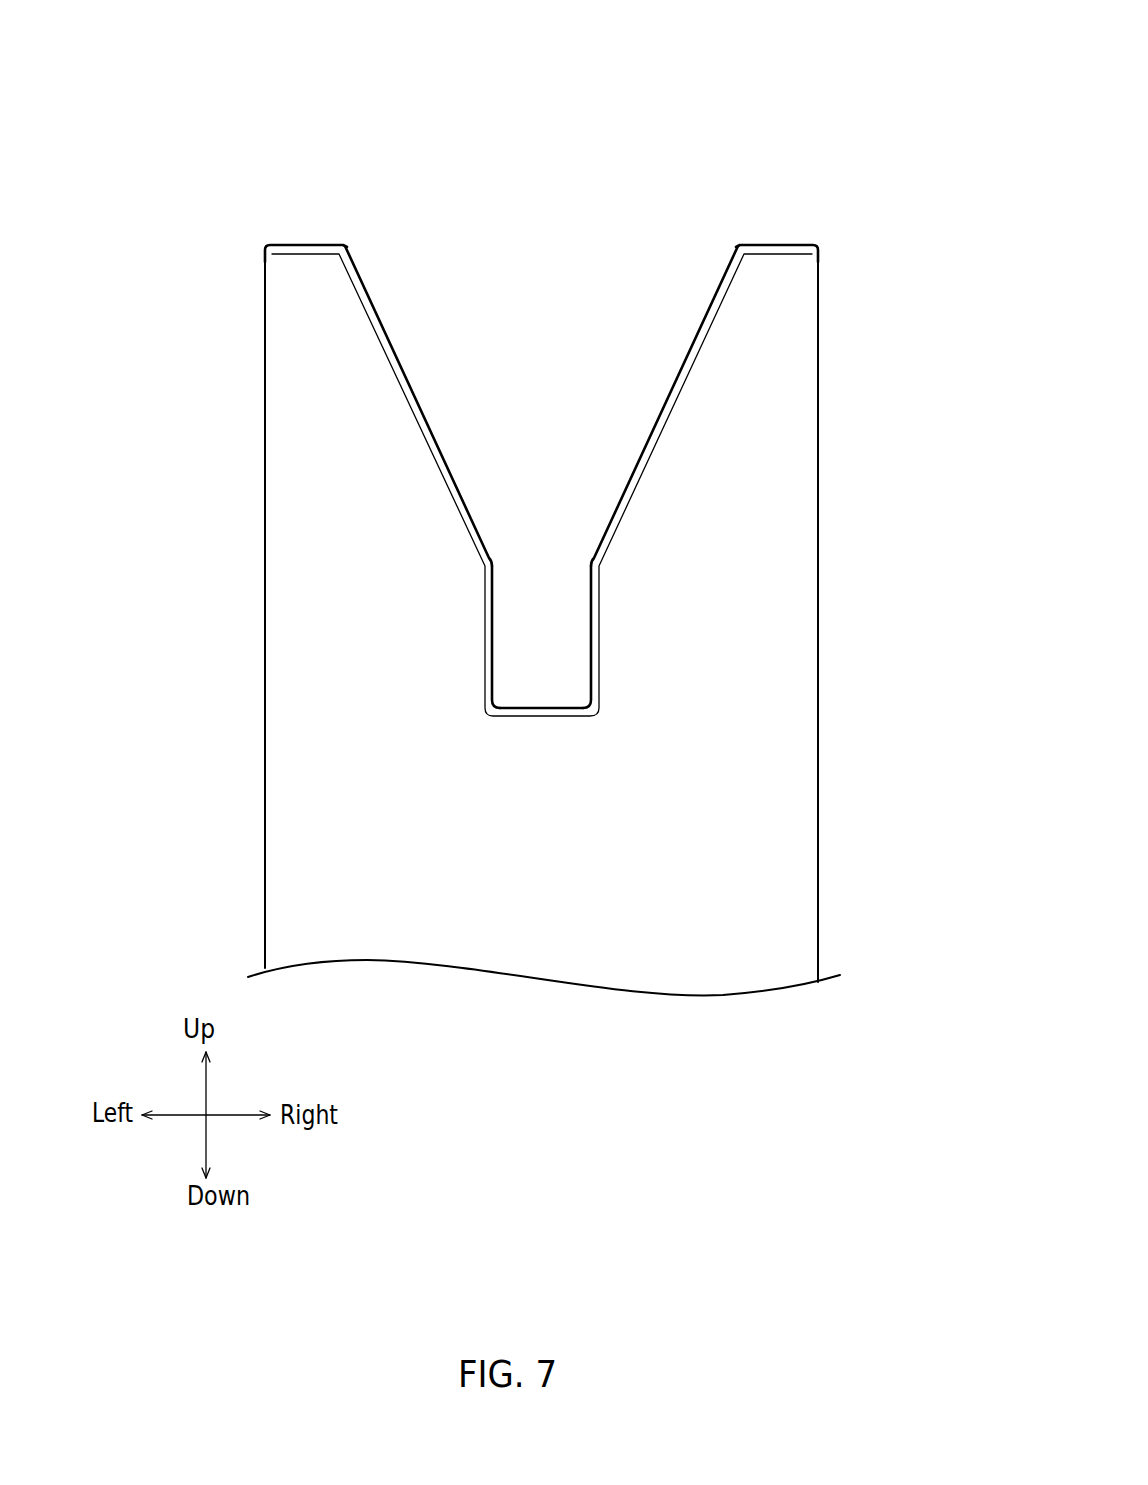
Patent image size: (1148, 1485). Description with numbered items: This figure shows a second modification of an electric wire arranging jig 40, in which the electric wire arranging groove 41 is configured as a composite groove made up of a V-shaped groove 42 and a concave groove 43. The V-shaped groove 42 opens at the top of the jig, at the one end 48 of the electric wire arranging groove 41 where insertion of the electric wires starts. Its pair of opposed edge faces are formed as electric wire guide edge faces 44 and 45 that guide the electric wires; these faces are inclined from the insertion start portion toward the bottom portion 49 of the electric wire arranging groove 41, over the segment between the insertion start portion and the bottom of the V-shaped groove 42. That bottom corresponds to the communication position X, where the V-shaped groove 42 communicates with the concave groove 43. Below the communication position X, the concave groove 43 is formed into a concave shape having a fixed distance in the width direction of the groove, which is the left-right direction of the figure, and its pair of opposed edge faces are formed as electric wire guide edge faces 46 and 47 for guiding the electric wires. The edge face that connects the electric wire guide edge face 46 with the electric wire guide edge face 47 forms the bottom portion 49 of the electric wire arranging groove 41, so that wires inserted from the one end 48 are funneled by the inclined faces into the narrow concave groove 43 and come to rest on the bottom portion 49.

The electric wire arranging jig 40 is at (543, 506).
The electric wire arranging groove 41 is at (543, 372).
The V-shaped groove 42 is at (558, 347).
The concave groove 43 is at (543, 419).
The electric wire guide edge face 44 is at (702, 320).
The electric wire guide edge face 45 is at (377, 308).
The electric wire guide edge face 46 is at (590, 662).
The electric wire guide edge face 47 is at (493, 667).
The one end of the electric wire arranging groove 48 is at (788, 245).
The bottom portion 49 is at (707, 685).
The communication position X is at (522, 567).